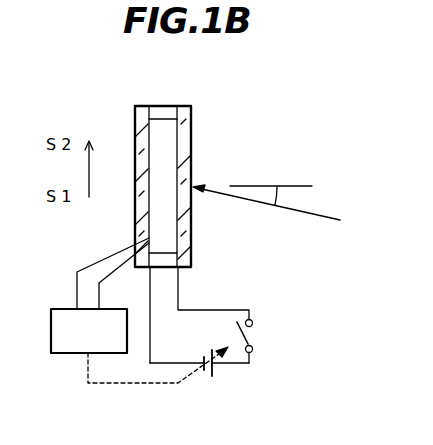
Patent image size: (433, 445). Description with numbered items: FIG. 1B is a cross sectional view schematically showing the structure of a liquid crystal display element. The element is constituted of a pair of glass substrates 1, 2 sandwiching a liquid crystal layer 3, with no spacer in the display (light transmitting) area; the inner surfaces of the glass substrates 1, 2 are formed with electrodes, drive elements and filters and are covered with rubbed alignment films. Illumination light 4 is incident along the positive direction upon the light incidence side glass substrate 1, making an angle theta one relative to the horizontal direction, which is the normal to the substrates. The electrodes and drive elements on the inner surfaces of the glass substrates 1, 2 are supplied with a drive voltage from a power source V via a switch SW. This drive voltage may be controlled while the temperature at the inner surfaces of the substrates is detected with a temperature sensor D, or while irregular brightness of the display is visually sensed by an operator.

The glass substrate 1 is at (193, 110).
The glass substrate 2 is at (139, 121).
The liquid crystal layer 3 is at (162, 118).
The illumination light 4 is at (295, 212).
The temperature sensor D is at (60, 308).
The switch SW is at (258, 328).
The power source V is at (168, 377).